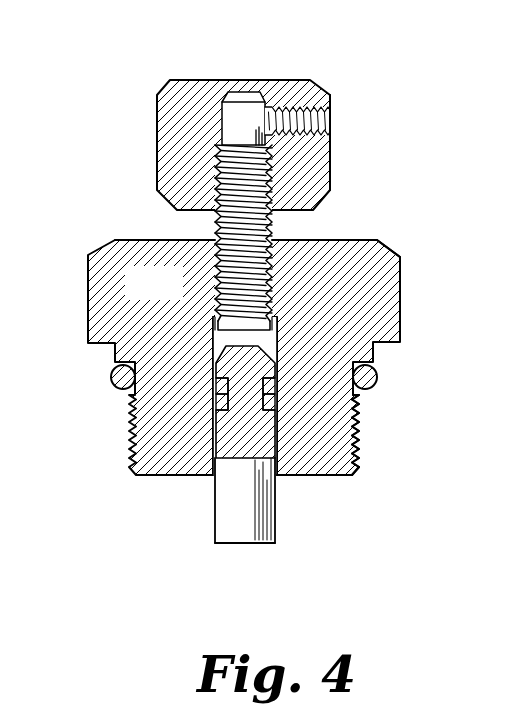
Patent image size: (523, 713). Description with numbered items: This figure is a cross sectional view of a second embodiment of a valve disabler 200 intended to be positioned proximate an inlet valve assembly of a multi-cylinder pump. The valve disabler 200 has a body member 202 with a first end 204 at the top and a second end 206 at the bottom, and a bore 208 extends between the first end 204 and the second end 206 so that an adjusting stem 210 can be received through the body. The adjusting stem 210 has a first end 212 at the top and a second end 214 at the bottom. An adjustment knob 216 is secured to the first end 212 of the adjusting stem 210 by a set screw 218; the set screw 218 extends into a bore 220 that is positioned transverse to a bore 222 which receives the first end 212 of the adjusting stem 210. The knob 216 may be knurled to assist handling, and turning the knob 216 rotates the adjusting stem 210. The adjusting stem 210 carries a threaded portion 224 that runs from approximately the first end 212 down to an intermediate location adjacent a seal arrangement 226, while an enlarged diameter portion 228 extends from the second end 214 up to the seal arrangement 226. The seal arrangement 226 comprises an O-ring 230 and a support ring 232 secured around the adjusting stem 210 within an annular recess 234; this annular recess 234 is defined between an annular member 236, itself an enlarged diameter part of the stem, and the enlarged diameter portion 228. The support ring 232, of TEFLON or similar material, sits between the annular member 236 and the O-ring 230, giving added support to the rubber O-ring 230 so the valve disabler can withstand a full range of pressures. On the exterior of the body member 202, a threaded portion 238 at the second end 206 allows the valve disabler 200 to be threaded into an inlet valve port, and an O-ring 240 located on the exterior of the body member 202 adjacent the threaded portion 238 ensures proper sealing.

The valve disabler 200 is at (357, 579).
The body member 202 is at (178, 296).
The first end 204 is at (355, 240).
The second end 206 is at (305, 477).
The bore 208 is at (278, 333).
The adjusting stem 210 is at (213, 490).
The first end 212 is at (244, 105).
The second end 214 is at (233, 543).
The adjustment knob 216 is at (157, 103).
The set screw 218 is at (331, 120).
The bore 220 is at (287, 108).
The bore 222 is at (217, 165).
The threaded portion 224 is at (217, 222).
The seal arrangement 226 is at (185, 360).
The enlarged diameter portion 228 is at (274, 437).
The O-ring 230 is at (275, 400).
The support ring 232 is at (274, 385).
The annular recess 234 is at (253, 453).
The annular member 236 is at (213, 365).
The threaded portion 238 is at (360, 462).
The O-ring 240 is at (378, 371).